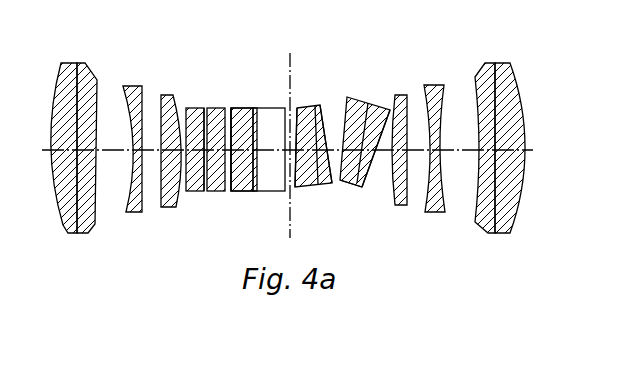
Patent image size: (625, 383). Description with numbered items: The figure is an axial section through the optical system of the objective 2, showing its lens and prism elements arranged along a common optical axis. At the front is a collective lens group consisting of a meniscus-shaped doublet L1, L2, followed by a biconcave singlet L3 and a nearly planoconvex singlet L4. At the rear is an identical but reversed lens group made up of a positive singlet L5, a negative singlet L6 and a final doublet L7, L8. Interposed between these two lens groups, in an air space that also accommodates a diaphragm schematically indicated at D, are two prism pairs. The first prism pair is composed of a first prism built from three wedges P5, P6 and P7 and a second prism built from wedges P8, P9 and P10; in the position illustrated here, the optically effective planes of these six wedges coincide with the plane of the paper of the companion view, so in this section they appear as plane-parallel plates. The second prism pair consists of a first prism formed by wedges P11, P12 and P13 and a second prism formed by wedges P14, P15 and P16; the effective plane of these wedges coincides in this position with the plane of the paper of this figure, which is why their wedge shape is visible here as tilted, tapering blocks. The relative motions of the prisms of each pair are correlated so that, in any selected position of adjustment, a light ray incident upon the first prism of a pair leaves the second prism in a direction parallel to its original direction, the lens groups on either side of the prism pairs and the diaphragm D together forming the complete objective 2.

The objective 2 is at (185, 290).
The diaphragm D is at (290, 53).
The doublet lens element L1 is at (70, 235).
The doublet lens element L2 is at (91, 235).
The biconcave singlet L3 is at (132, 214).
The nearly planoconvex singlet L4 is at (166, 209).
The positive singlet L5 is at (402, 207).
The negative singlet L6 is at (435, 214).
The final doublet lens element L7 is at (485, 235).
The final doublet lens element L8 is at (503, 235).
The wedge P5 is at (194, 107).
The wedge P6 is at (203, 193).
The wedge P7 is at (217, 107).
The wedge P8 is at (232, 193).
The wedge P9 is at (247, 107).
The wedge P10 is at (262, 193).
The wedge P11 is at (305, 189).
The wedge P12 is at (308, 106).
The wedge P13 is at (327, 188).
The wedge P14 is at (361, 96).
The wedge P15 is at (352, 189).
The wedge P16 is at (381, 102).